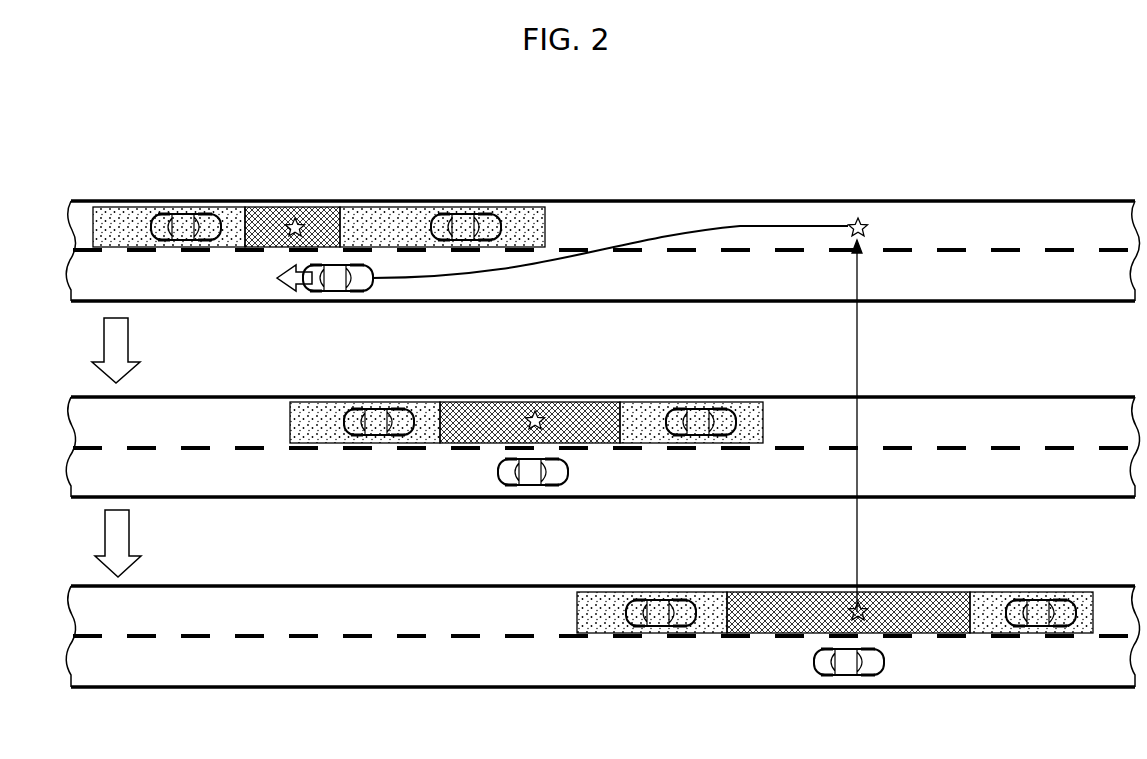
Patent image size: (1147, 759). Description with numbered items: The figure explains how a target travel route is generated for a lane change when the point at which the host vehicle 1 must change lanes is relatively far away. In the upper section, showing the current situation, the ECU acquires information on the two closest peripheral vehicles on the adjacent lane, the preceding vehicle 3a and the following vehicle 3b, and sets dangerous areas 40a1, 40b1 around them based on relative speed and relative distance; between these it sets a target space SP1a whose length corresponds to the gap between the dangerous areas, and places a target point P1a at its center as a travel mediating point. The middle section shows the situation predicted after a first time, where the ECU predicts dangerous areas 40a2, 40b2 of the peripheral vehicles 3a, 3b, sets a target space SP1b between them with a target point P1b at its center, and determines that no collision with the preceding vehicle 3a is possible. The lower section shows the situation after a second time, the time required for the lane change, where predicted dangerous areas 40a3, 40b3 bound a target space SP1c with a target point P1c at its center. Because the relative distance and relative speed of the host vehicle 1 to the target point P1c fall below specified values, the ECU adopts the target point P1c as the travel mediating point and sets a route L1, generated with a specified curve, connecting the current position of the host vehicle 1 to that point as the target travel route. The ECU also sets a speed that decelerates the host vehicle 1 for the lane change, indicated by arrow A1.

The host vehicle 1 is at (338, 294).
The peripheral vehicle (preceding vehicle) 3a is at (466, 213).
The peripheral vehicle (following vehicle) 3b is at (176, 213).
The dangerous area 40a1 is at (387, 214).
The dangerous area 40b1 is at (121, 214).
The dangerous area 40a2 is at (644, 408).
The dangerous area 40b2 is at (316, 408).
The dangerous area 40a3 is at (990, 598).
The dangerous area 40b3 is at (598, 598).
The target space SP1a is at (270, 214).
The target space SP1b is at (488, 408).
The target space SP1c is at (778, 598).
The target point P1a is at (298, 218).
The target point P1b is at (540, 412).
The target point P1c is at (862, 221).
The route L1 is at (640, 245).
The arrow A1 is at (281, 278).